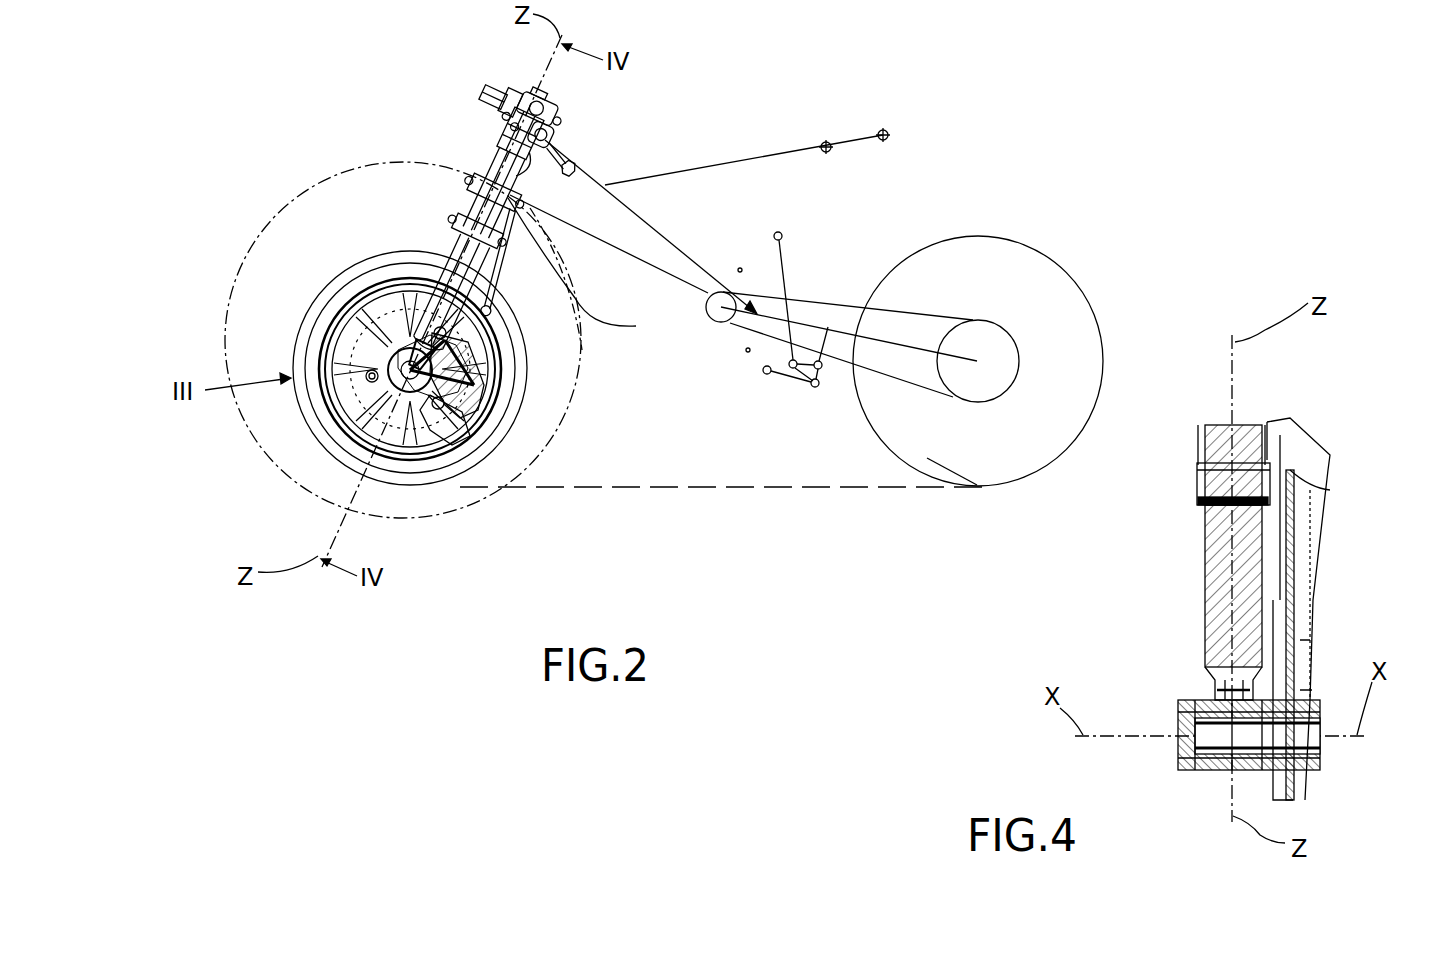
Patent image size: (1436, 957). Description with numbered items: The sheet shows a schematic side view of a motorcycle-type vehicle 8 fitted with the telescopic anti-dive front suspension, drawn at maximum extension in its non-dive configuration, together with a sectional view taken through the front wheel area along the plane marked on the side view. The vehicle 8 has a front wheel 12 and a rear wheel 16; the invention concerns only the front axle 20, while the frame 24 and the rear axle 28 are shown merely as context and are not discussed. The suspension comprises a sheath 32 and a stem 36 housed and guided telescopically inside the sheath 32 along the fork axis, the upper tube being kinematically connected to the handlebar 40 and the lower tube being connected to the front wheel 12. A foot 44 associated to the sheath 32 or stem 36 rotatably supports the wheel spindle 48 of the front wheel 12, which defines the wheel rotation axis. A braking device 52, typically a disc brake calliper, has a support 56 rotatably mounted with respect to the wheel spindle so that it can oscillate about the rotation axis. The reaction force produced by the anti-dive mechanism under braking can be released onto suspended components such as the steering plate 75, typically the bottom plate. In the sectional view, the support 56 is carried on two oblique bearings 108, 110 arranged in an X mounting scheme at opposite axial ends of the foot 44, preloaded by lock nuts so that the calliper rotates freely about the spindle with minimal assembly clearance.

In FIG. 2, the vehicle 8 is at (743, 216).
In FIG. 2, the front wheel 12 is at (556, 372).
In FIG. 2, the rear wheel 16 is at (1036, 277).
In FIG. 2, the front axle 20 is at (452, 201).
In FIG. 2, the frame 24 is at (684, 246).
In FIG. 2, the rear axle 28 is at (941, 230).
In FIG. 2, the sheath 32 is at (453, 222).
In FIG. 4, the sheath 32 is at (1198, 445).
In FIG. 2, the stem 36 is at (300, 195).
In FIG. 4, the stem 36 is at (1203, 577).
In FIG. 2, the handlebar 40 is at (550, 122).
In FIG. 2, the foot 44 is at (395, 364).
In FIG. 4, the foot 44 is at (1213, 703).
In FIG. 2, the wheel spindle 48 is at (372, 380).
In FIG. 2, the braking device 52 is at (470, 430).
In FIG. 2, the support 56 is at (418, 430).
In FIG. 2, the steering plate 75 is at (589, 269).
In FIG. 4, the oblique bearing 108 is at (1197, 770).
In FIG. 4, the oblique bearing 110 is at (1298, 765).